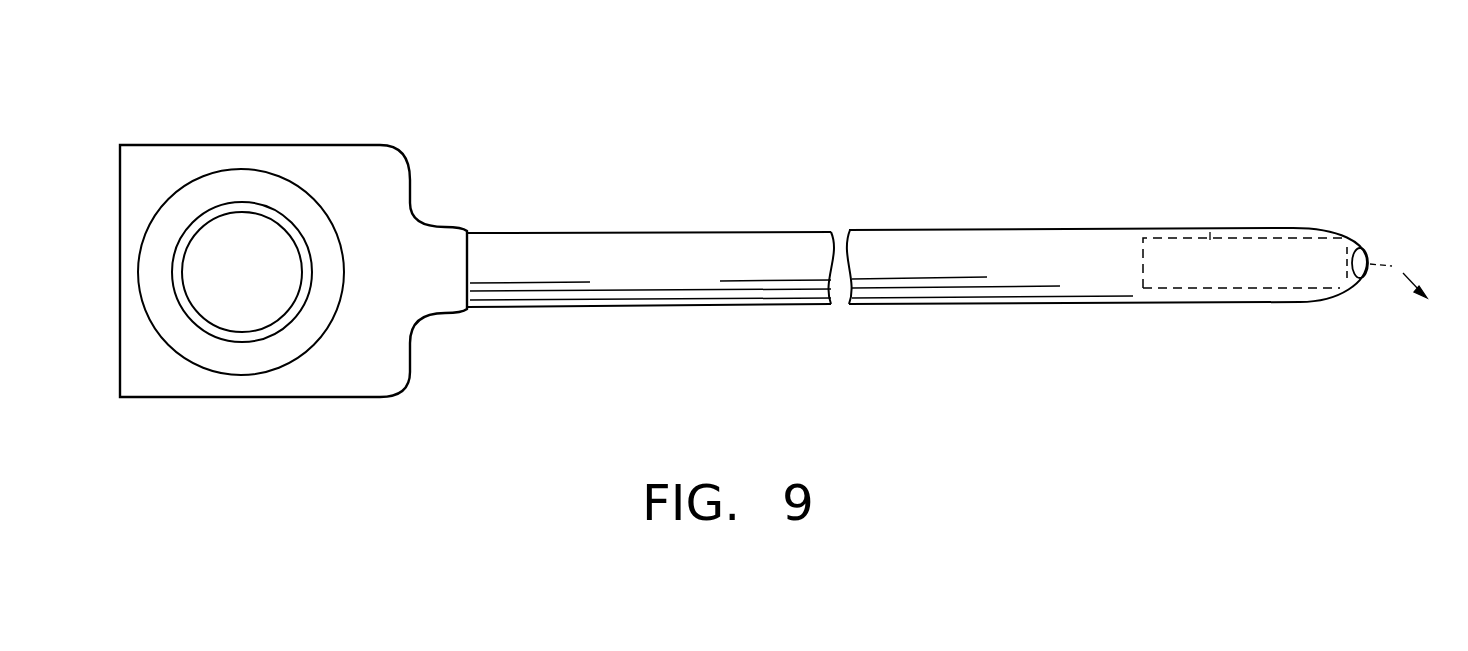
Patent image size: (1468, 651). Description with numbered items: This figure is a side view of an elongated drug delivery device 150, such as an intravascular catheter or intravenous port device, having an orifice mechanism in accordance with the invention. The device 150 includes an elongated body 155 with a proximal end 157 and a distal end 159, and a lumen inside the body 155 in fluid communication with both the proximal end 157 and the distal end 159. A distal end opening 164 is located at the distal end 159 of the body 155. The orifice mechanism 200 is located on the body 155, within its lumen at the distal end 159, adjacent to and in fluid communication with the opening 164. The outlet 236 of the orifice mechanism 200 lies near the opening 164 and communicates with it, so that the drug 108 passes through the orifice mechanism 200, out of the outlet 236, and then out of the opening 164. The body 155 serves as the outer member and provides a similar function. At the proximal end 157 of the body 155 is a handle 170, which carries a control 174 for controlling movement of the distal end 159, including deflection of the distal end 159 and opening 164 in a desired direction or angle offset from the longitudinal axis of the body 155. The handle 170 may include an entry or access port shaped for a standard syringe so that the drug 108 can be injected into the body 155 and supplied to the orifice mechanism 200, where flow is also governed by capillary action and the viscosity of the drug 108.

The drug delivery device 150 is at (838, 96).
The handle 170 is at (272, 398).
The control 174 is at (246, 168).
The proximal end 157 is at (470, 312).
The body 155 is at (676, 305).
The distal end 159 is at (1306, 302).
The outlet 236 is at (1358, 232).
The orifice mechanism 200 is at (1210, 235).
The distal end opening 164 is at (1369, 256).
The drug 108 is at (1385, 268).